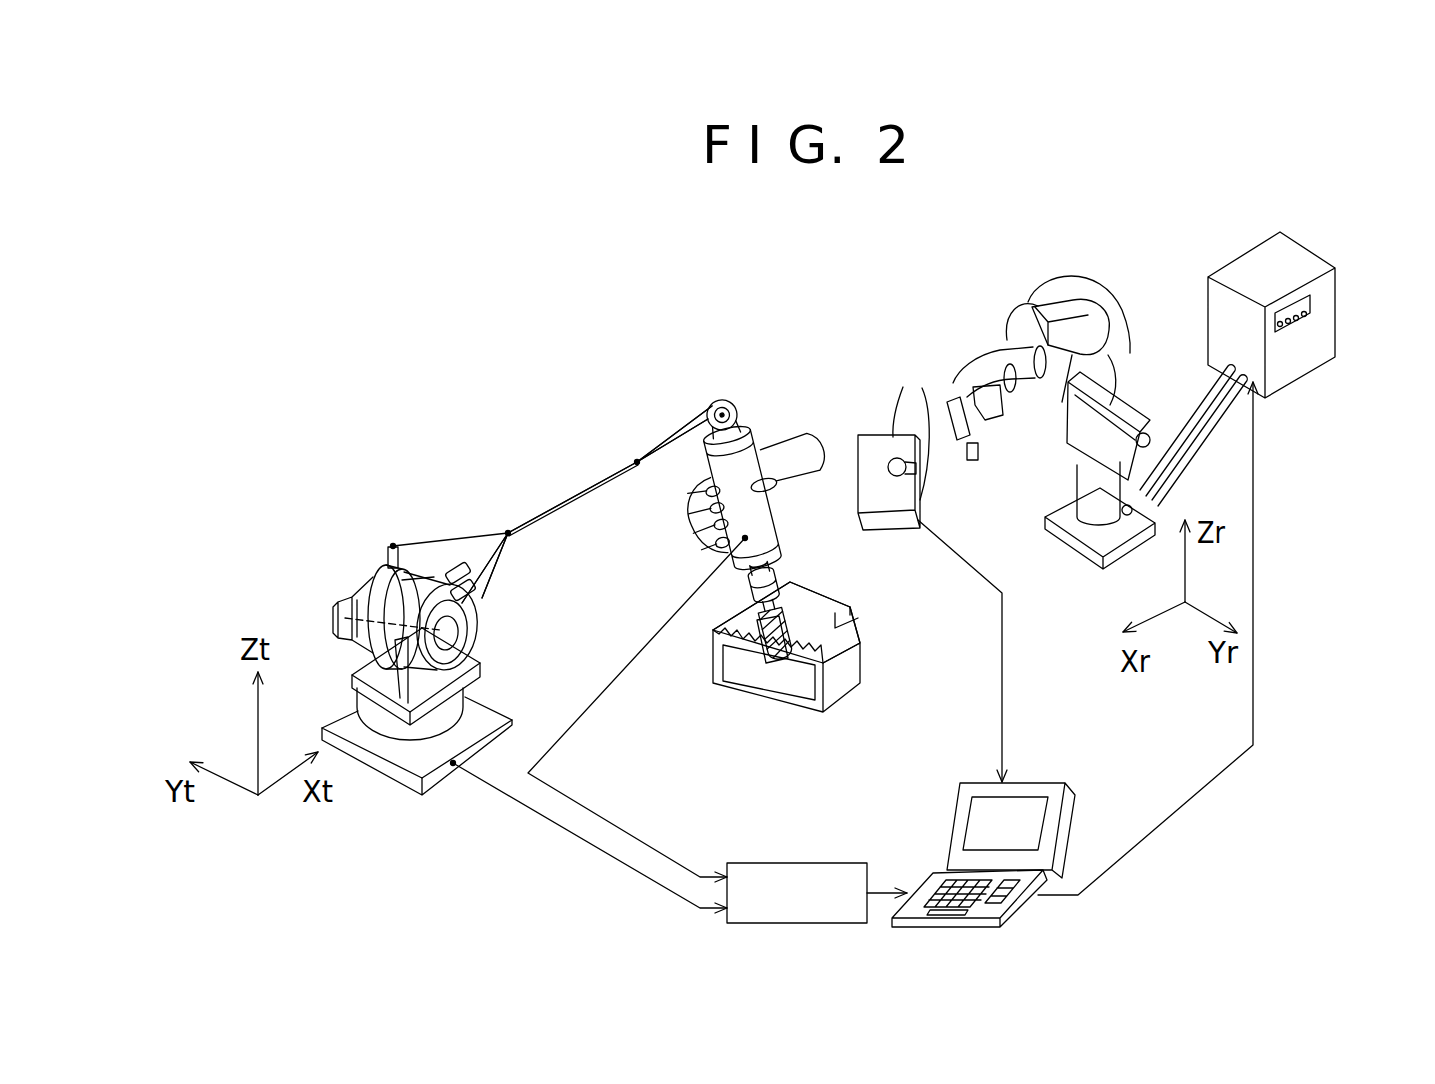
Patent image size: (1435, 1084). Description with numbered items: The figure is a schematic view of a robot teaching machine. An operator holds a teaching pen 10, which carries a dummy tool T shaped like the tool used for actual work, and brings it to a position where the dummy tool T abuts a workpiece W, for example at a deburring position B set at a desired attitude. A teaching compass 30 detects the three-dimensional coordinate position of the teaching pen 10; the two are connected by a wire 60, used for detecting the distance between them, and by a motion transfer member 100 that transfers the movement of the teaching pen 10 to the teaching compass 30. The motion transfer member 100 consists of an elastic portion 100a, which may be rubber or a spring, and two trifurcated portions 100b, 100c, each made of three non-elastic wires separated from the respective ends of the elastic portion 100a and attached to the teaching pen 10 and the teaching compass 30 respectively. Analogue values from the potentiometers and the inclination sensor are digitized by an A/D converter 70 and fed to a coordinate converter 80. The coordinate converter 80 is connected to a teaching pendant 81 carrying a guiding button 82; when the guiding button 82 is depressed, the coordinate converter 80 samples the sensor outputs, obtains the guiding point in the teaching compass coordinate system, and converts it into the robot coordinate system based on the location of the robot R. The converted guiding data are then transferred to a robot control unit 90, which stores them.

The teaching pen 10 is at (756, 418).
The teaching compass 30 is at (380, 508).
The wire 60 is at (468, 562).
The A/D converter 70 is at (790, 918).
The coordinate converter 80 is at (1025, 905).
The teaching pendant 81 is at (895, 513).
The guiding button 82 is at (920, 495).
The robot control unit 90 is at (1323, 317).
The motion transfer member 100 is at (560, 500).
The elastic portion 100a is at (585, 505).
The trifurcated portion 100b is at (676, 408).
The trifurcated portion 100c is at (500, 590).
The deburring position B is at (792, 632).
The dummy tool T is at (755, 650).
The workpiece W is at (845, 674).
The robot R is at (1126, 388).